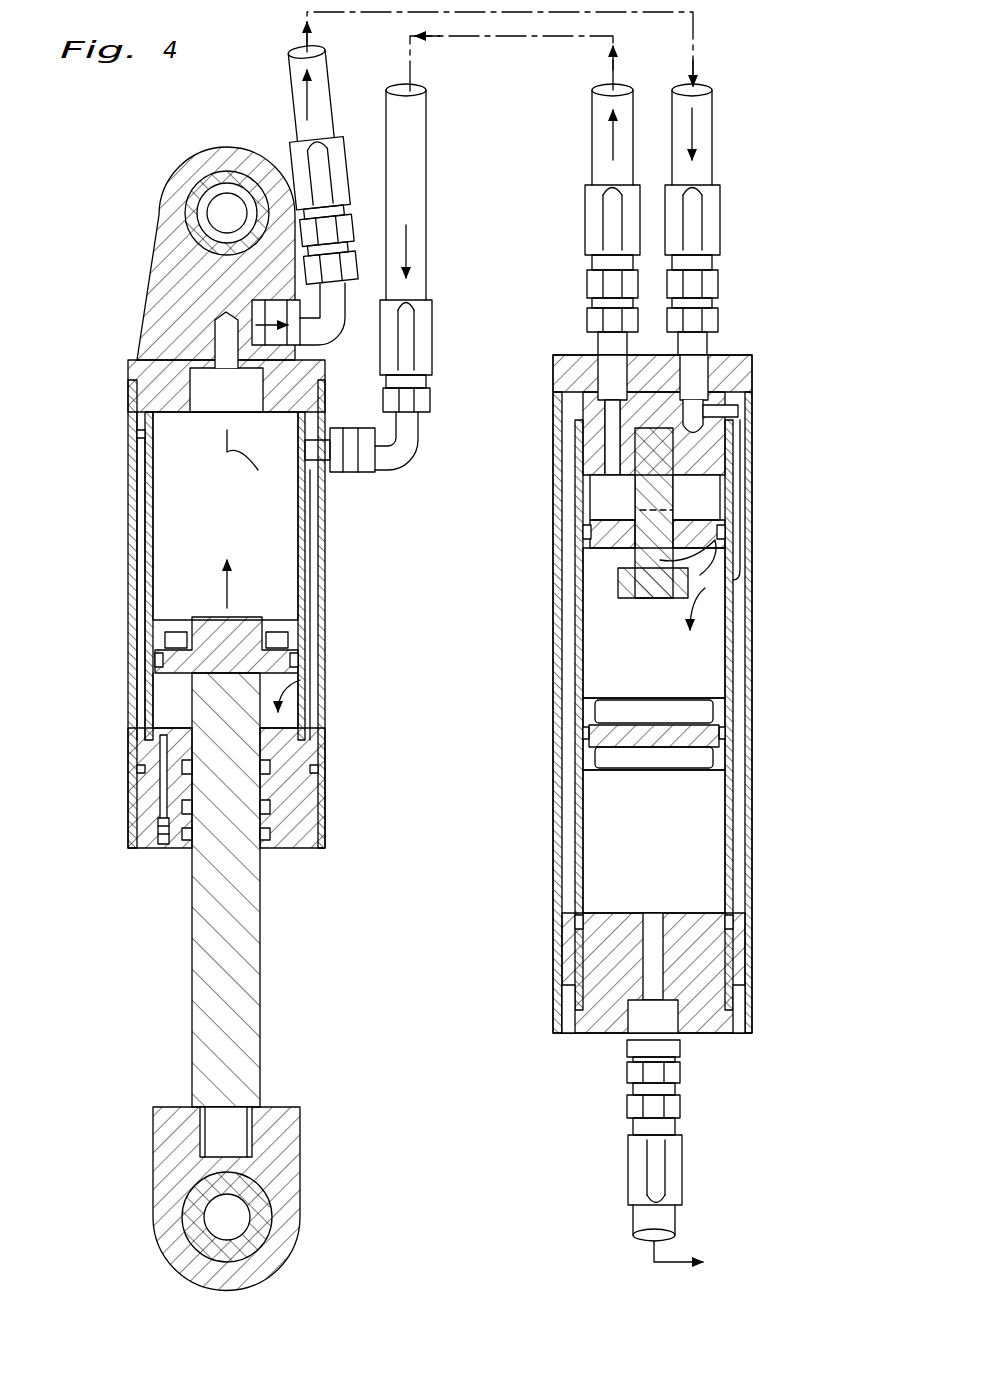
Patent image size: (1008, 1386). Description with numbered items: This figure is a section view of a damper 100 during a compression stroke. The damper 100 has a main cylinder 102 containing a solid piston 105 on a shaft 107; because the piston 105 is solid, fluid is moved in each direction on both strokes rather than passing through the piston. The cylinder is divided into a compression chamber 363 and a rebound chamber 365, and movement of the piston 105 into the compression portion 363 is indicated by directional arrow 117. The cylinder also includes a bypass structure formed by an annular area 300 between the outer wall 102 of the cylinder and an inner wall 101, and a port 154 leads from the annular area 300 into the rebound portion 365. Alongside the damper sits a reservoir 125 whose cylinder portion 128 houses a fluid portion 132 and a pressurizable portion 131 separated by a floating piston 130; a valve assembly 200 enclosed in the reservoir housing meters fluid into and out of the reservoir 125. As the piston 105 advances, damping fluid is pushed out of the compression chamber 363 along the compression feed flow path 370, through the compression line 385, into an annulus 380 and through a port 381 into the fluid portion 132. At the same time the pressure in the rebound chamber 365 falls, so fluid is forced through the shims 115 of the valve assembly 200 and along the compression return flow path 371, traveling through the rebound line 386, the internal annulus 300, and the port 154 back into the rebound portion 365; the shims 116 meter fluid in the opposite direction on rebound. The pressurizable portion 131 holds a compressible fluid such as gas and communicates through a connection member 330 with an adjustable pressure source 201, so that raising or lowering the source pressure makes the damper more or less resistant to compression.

The damper 100 is at (130, 138).
The inner wall 101 is at (150, 595).
The main cylinder 102 is at (325, 755).
The piston 105 is at (238, 622).
The shaft 107 is at (260, 1006).
The shims 115 is at (700, 502).
The shims 116 is at (600, 568).
The directional arrow 117 is at (227, 560).
The reservoir 125 is at (760, 940).
The cylinder portion 128 is at (752, 737).
The floating piston 130 is at (640, 740).
The pressurizable portion 131 is at (700, 869).
The fluid portion 132 is at (700, 667).
The port 154 is at (305, 705).
The valve assembly 200 is at (758, 365).
The adjustable pressure source 201 is at (775, 1267).
The annular area 300 is at (140, 517).
The connection member 330 is at (633, 1214).
The compression chamber 363 is at (175, 470).
The rebound chamber 365 is at (175, 707).
The compression feed flow path 370 is at (300, 104).
The compression return flow path 371 is at (416, 245).
The annulus 380 is at (565, 657).
The port 381 is at (728, 582).
The compression line 385 is at (290, 72).
The rebound line 386 is at (428, 190).